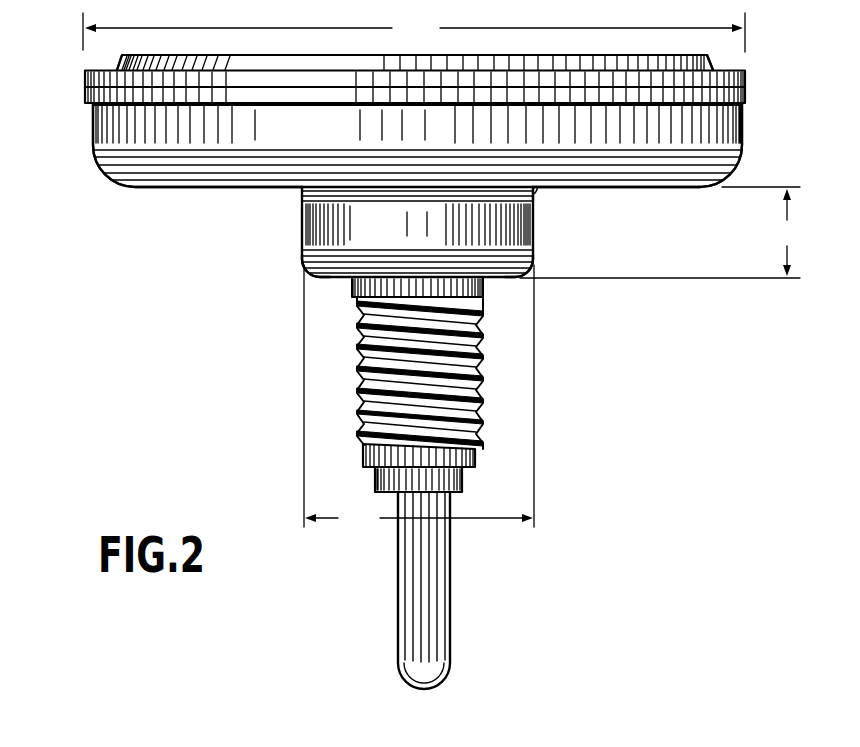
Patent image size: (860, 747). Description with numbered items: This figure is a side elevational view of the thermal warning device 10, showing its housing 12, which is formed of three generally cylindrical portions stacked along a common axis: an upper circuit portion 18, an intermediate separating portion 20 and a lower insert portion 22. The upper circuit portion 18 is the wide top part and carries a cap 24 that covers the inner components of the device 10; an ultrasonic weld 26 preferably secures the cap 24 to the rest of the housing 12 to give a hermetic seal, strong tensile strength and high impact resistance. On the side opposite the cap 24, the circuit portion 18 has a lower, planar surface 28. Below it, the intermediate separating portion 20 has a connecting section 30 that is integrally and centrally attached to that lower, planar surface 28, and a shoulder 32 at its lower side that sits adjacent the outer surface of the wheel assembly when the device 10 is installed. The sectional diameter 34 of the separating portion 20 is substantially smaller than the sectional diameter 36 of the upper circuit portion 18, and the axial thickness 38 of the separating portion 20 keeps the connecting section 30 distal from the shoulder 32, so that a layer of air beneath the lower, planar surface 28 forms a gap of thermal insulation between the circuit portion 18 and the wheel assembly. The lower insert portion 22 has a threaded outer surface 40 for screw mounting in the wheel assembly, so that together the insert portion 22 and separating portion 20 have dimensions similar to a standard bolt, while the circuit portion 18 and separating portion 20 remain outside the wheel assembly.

The thermal warning device 10 is at (757, 44).
The housing 12 is at (750, 146).
The upper circuit portion 18 is at (76, 146).
The intermediate separating portion 20 is at (276, 249).
The lower insert portion 22 is at (284, 388).
The cap 24 is at (258, 52).
The ultrasonic weld 26 is at (84, 84).
The lower planar surface 28 is at (186, 189).
The connecting section 30 is at (541, 191).
The shoulder 32 is at (330, 282).
The sectional diameter of the separating portion 34 is at (419, 399).
The sectional diameter of the upper circuit portion 36 is at (414, 32).
The axial thickness 38 is at (663, 232).
The threaded outer surface 40 is at (492, 410).